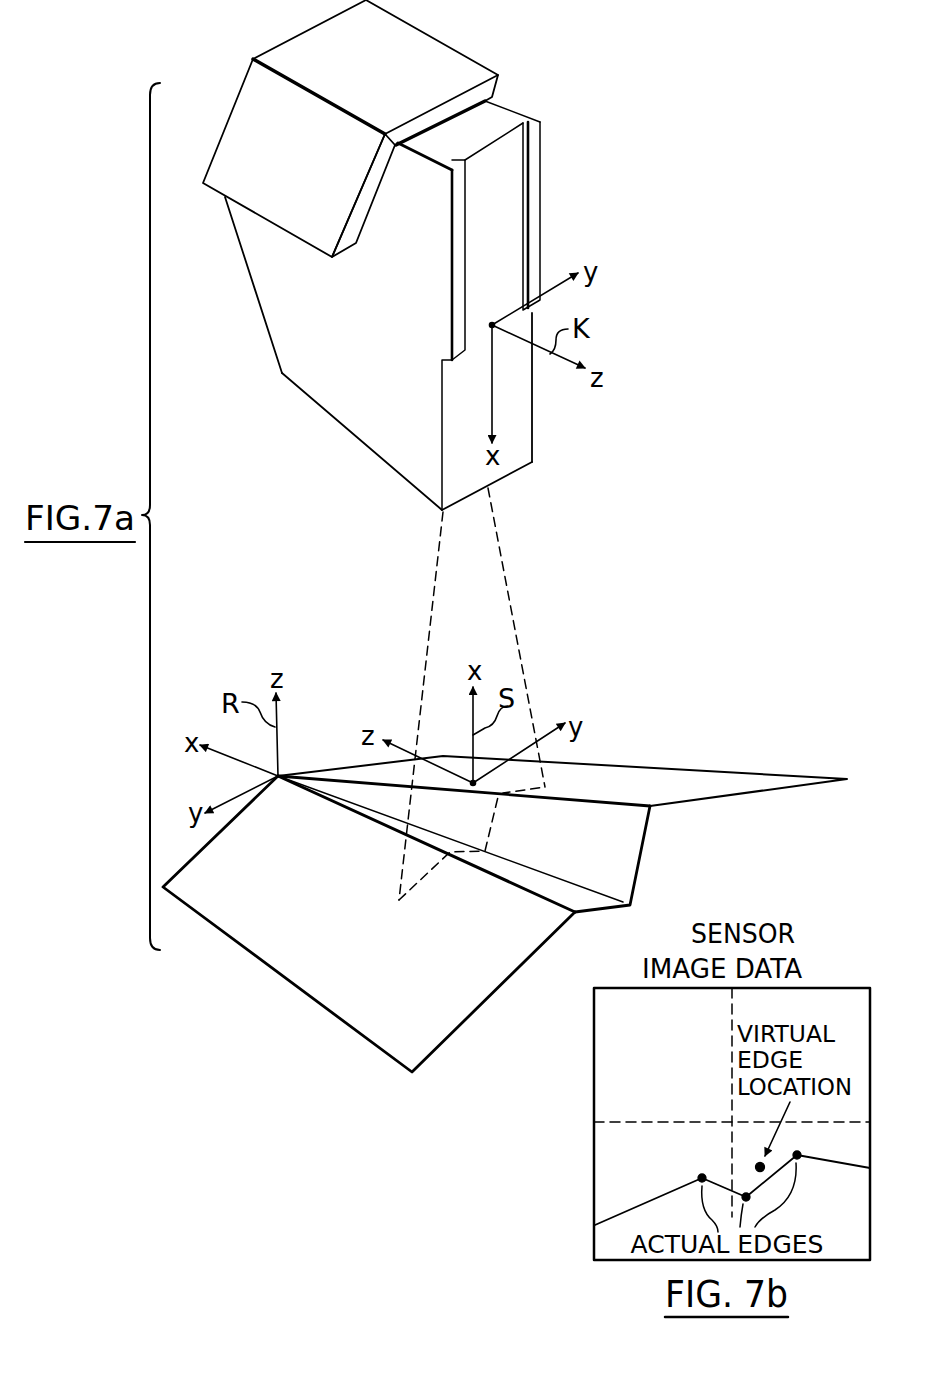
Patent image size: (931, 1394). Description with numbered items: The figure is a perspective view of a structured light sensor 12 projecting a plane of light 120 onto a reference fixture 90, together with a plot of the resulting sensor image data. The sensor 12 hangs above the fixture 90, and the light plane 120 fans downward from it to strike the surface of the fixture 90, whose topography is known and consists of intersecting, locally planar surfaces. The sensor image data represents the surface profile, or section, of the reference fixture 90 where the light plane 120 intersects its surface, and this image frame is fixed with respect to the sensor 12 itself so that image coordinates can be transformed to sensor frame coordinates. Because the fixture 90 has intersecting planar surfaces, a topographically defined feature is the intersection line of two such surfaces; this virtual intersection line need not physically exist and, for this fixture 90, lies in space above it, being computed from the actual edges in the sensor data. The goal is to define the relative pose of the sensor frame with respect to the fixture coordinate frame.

The structured light sensor 12 is at (252, 283).
The plane of light 120 is at (510, 602).
The reference fixture 90 is at (747, 772).